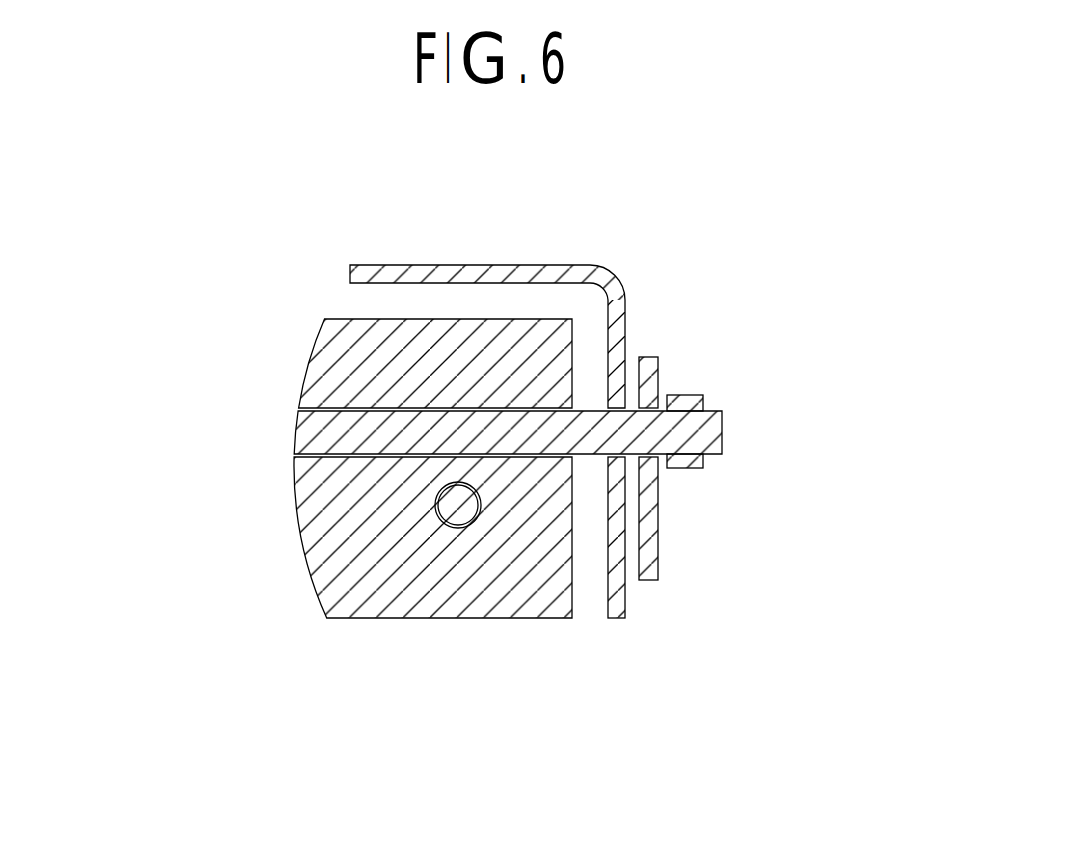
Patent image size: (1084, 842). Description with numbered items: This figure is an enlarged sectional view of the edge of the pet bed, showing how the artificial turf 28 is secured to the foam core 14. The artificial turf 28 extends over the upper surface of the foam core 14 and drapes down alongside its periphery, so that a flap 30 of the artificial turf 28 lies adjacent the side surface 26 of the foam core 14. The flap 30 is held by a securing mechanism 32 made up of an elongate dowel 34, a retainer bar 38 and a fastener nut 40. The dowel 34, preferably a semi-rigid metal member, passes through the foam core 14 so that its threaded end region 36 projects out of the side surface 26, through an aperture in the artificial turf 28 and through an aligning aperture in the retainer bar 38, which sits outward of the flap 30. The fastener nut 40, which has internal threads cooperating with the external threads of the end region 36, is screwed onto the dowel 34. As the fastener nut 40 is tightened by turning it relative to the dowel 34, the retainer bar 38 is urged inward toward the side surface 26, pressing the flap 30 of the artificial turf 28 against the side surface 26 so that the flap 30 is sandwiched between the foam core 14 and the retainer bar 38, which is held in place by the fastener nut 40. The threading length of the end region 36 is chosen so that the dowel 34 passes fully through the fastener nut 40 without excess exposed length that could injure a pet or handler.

The foam core 14 is at (347, 375).
The side surface 26 is at (522, 580).
The artificial turf 28 is at (575, 266).
The flap 30 is at (627, 600).
The securing mechanism 32 is at (778, 397).
The dowel 34 is at (458, 505).
The threaded end region 36 is at (727, 437).
The retainer bar 38 is at (659, 536).
The fastener nut 40 is at (700, 393).